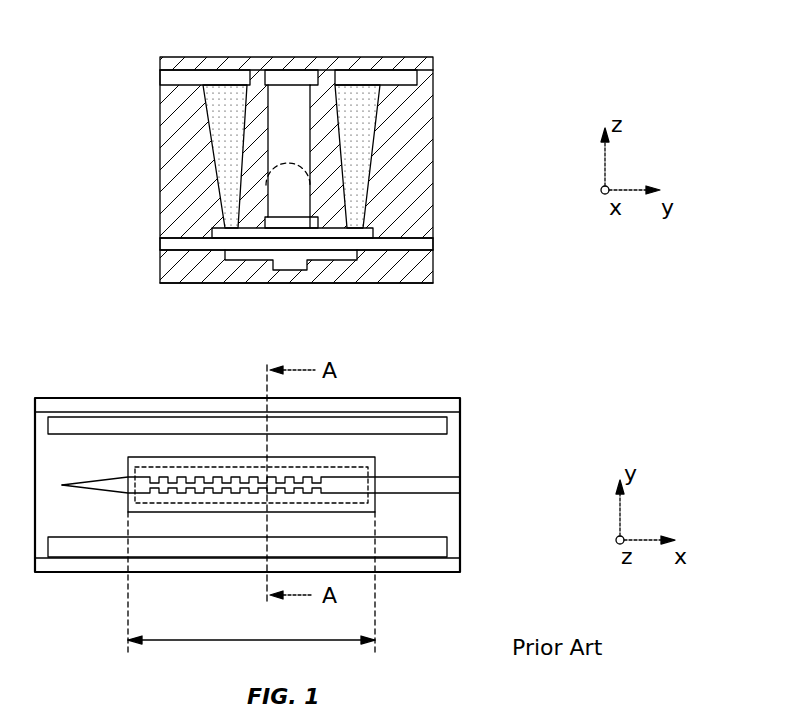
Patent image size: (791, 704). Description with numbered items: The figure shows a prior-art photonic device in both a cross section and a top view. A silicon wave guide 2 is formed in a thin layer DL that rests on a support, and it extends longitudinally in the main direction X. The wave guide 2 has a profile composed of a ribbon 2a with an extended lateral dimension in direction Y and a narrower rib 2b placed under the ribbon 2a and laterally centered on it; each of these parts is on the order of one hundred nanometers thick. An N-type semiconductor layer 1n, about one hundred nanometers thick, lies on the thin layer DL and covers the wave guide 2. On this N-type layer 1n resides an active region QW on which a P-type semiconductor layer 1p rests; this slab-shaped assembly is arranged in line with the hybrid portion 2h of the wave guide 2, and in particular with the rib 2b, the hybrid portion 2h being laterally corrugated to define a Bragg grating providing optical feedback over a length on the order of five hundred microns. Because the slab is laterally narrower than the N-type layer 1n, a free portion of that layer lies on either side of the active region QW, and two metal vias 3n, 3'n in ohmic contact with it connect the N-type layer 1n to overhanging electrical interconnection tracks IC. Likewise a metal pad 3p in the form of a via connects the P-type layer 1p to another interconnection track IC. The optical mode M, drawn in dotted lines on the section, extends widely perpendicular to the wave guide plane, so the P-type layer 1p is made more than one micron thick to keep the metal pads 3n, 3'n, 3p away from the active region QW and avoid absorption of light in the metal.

The electrical interconnection tracks IC is at (177, 78).
The metal pad 3p is at (295, 90).
The metal via 3n is at (360, 180).
The metal via 3'n is at (296, 327).
The P-type semiconductor layer 1p is at (291, 195).
The N-type semiconductor layer 1n is at (285, 232).
The optical mode M is at (262, 205).
The thin layer DL is at (417, 270).
The wave guide 2 is at (228, 268).
The ribbon 2a is at (352, 258).
The rib 2b is at (278, 275).
The active region QW is at (307, 228).
The hybrid portion 2h is at (251, 582).